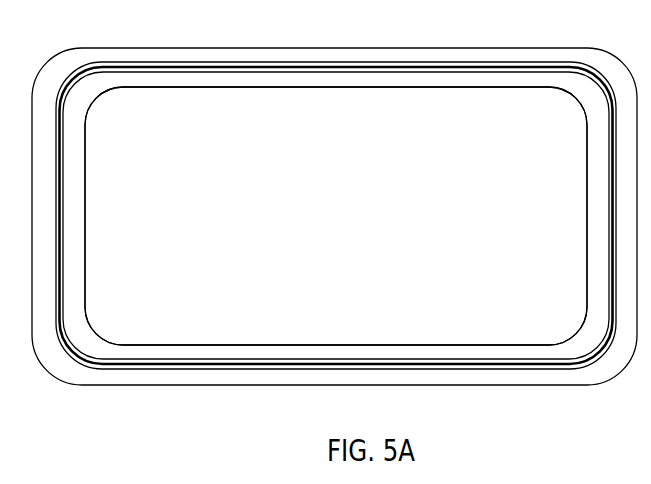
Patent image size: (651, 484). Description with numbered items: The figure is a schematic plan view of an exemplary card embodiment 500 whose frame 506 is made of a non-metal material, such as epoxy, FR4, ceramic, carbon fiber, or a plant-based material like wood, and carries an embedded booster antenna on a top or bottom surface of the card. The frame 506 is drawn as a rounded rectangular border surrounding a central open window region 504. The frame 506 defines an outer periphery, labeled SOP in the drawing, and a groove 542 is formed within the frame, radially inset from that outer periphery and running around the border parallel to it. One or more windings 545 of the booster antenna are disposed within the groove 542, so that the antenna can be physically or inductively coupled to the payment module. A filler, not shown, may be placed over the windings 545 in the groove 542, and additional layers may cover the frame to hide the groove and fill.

The card embodiment 500 is at (334, 226).
The transparent window region 504 is at (377, 260).
The frame 506 is at (222, 345).
The groove 542 is at (313, 358).
The windings 545 is at (243, 363).
The shield outer perimeter SOP is at (303, 48).